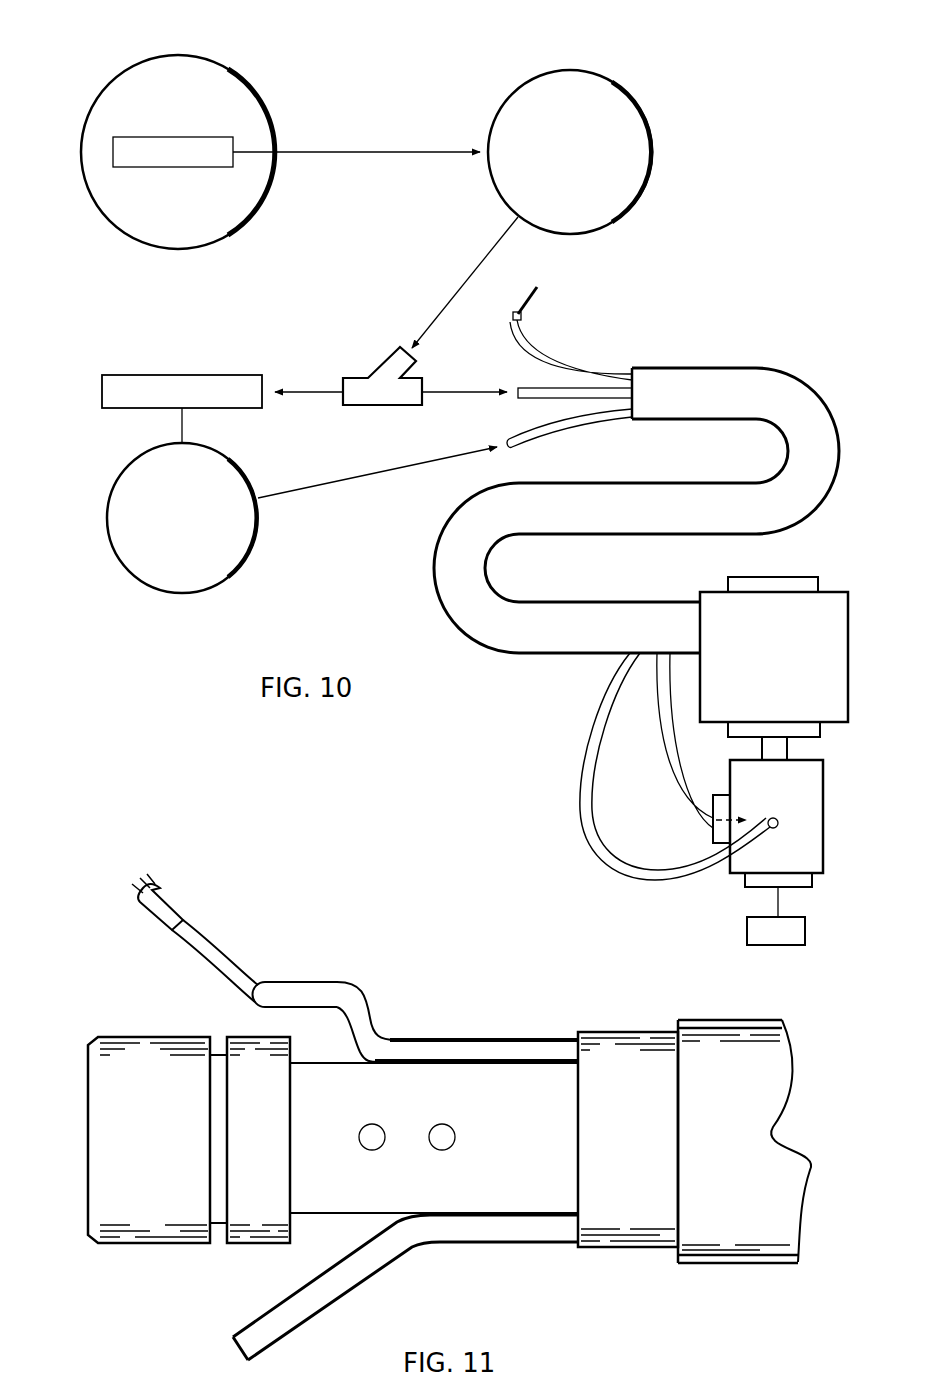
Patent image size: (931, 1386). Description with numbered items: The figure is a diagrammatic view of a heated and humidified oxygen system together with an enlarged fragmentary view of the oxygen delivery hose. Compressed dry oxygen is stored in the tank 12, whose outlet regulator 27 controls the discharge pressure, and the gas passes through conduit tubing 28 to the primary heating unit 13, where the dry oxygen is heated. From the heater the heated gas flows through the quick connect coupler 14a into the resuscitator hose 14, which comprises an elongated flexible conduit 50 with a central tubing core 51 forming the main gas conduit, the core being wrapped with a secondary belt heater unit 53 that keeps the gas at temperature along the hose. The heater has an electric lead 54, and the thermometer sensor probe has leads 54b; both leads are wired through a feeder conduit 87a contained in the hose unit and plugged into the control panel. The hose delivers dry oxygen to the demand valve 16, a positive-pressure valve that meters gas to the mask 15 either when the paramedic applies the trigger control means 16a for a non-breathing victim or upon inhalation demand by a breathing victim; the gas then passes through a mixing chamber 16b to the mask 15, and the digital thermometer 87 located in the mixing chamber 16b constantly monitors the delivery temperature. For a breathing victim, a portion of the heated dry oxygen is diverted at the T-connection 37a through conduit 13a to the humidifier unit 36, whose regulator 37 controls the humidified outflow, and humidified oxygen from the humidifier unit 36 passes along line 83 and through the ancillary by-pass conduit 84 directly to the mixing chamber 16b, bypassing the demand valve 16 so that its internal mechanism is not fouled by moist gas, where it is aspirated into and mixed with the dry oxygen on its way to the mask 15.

In FIG. 10, the tank 12 is at (234, 64).
In FIG. 10, the primary heating unit 13 is at (647, 108).
In FIG. 10, the conduit 13a is at (456, 300).
In FIG. 10, the resuscitator hose 14 is at (708, 362).
In FIG. 11, the resuscitator hose 14 is at (742, 1268).
In FIG. 11, the quick connect coupler 14a is at (118, 1243).
In FIG. 10, the mask 15 is at (808, 931).
In FIG. 10, the demand valve 16 is at (825, 692).
In FIG. 10, the trigger control means 16a is at (782, 577).
In FIG. 10, the mixing chamber 16b is at (806, 833).
In FIG. 10, the tank regulator 27 is at (113, 155).
In FIG. 10, the conduit tubing 28 is at (376, 150).
In FIG. 10, the humidifier unit 36 is at (243, 568).
In FIG. 10, the regulator 37 is at (102, 390).
In FIG. 10, the T-connection 37a is at (348, 377).
In FIG. 10, the elongated flexible conduit 50 is at (728, 421).
In FIG. 11, the elongated flexible conduit 50 is at (708, 1020).
In FIG. 10, the central tubing core 51 is at (565, 393).
In FIG. 11, the central tubing core 51 is at (413, 1090).
In FIG. 11, the secondary belt heater unit 53 is at (598, 1032).
In FIG. 10, the electric lead 54 is at (523, 317).
In FIG. 11, the electric lead 54 is at (195, 933).
In FIG. 10, the leads 54b is at (524, 292).
In FIG. 10, the humidifier supply line 83 is at (395, 489).
In FIG. 10, the ancillary by-pass conduit 84 is at (551, 437).
In FIG. 11, the ancillary by-pass conduit 84 is at (405, 1287).
In FIG. 10, the digital thermometer 87 is at (752, 818).
In FIG. 10, the feeder conduit 87a is at (538, 357).